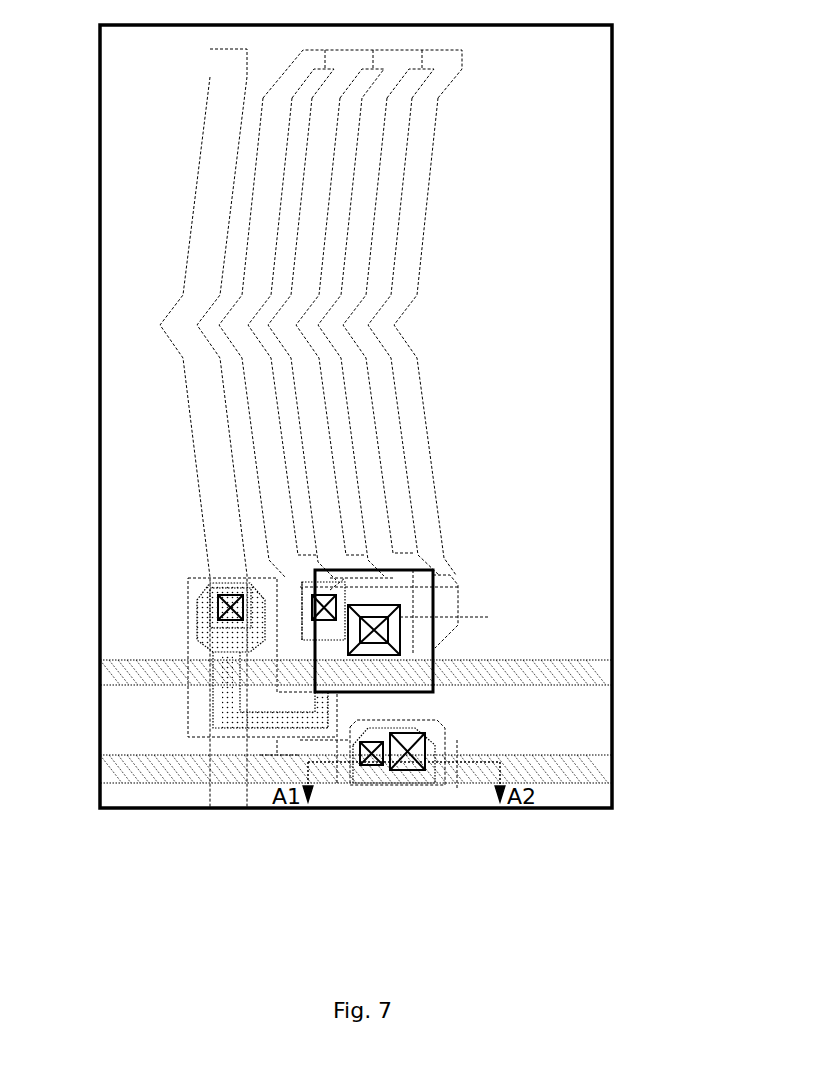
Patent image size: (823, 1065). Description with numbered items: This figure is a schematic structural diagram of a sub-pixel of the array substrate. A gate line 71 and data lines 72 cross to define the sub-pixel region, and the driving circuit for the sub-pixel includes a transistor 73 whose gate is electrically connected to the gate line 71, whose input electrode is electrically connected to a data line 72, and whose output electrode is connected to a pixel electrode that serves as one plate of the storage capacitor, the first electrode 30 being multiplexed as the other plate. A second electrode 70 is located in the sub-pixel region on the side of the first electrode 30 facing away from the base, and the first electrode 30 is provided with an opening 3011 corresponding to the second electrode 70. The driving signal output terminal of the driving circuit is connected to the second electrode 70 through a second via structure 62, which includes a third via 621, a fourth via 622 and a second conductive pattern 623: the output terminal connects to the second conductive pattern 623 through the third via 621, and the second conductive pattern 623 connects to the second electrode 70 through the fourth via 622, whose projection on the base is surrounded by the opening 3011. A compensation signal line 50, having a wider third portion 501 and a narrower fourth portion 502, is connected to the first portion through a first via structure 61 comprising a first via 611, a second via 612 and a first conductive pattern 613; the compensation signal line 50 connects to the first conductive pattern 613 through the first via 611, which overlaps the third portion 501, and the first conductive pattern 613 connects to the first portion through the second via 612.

The first electrode 30 is at (612, 165).
The second electrode 70 is at (418, 266).
The data line 72 is at (208, 458).
The transistor 73 is at (190, 638).
The second via structure 62 is at (712, 532).
The third via 621 is at (336, 600).
The fourth via 622 is at (400, 622).
The second conductive pattern 623 is at (383, 562).
The gate line 71 is at (548, 673).
The opening 3011 is at (435, 694).
The compensation signal line 50 is at (365, 872).
The third portion 501 is at (351, 786).
The fourth portion 502 is at (277, 780).
The first via structure 61 is at (510, 872).
The first via 611 is at (379, 786).
The second via 612 is at (421, 786).
The first conductive pattern 613 is at (463, 786).